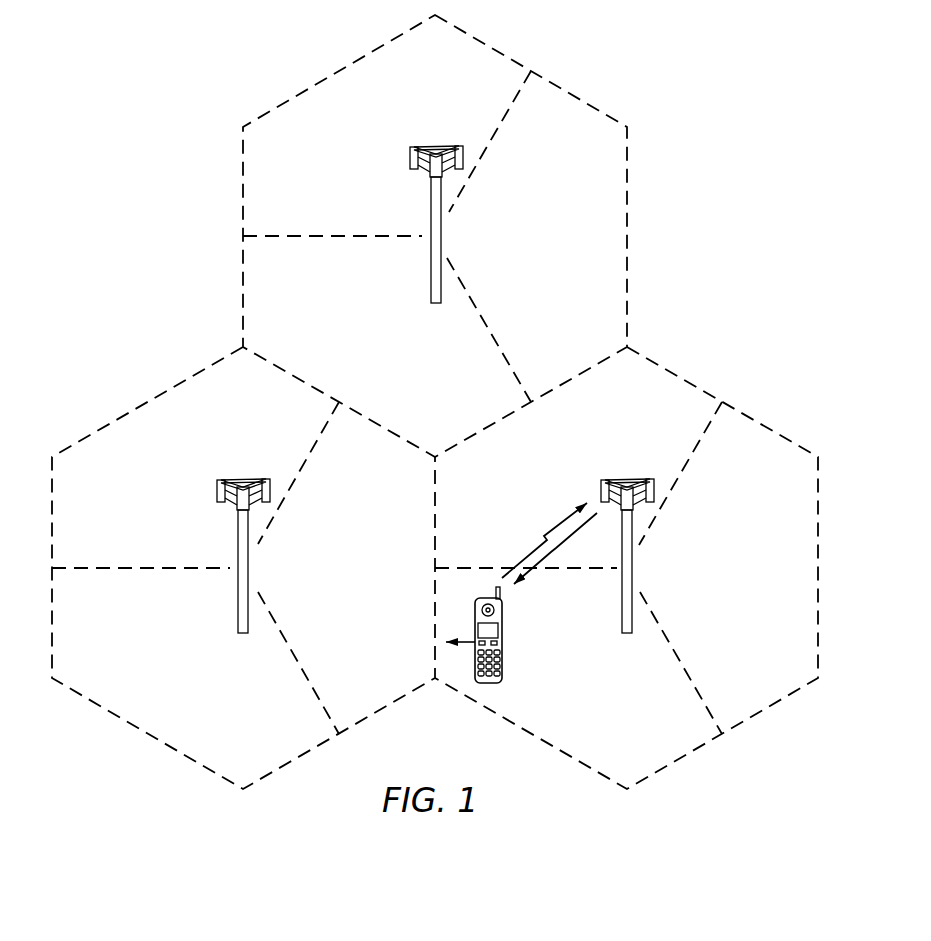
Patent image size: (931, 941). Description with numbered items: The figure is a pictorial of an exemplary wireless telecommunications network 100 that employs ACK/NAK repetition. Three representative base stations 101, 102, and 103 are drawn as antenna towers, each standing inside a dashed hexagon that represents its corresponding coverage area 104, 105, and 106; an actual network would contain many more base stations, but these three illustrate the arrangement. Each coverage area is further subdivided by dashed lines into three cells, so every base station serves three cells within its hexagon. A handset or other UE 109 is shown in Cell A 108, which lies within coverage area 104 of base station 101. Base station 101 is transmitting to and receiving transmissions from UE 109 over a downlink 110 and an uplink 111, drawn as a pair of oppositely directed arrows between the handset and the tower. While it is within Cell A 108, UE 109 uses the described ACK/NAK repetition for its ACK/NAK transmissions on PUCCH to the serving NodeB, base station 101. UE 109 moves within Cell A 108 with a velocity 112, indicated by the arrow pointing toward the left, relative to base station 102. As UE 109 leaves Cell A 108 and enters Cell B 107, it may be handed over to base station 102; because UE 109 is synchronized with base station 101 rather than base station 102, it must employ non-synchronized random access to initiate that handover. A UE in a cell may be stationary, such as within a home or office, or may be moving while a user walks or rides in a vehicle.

The wireless telecommunications network 100 is at (143, 98).
The base station 101 is at (633, 568).
The base station 102 is at (238, 597).
The base station 103 is at (430, 265).
The coverage area 104 is at (757, 713).
The coverage area 105 is at (148, 735).
The coverage area 106 is at (627, 237).
The Cell B 107 is at (387, 677).
The Cell A 108 is at (632, 743).
The UE 109 is at (503, 650).
The downlink 110 is at (555, 565).
The uplink 111 is at (563, 523).
The velocity 112 is at (465, 645).